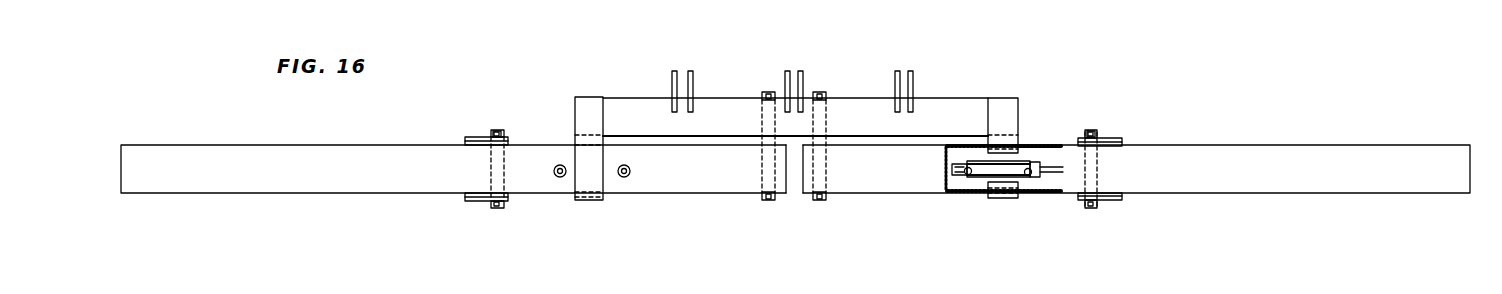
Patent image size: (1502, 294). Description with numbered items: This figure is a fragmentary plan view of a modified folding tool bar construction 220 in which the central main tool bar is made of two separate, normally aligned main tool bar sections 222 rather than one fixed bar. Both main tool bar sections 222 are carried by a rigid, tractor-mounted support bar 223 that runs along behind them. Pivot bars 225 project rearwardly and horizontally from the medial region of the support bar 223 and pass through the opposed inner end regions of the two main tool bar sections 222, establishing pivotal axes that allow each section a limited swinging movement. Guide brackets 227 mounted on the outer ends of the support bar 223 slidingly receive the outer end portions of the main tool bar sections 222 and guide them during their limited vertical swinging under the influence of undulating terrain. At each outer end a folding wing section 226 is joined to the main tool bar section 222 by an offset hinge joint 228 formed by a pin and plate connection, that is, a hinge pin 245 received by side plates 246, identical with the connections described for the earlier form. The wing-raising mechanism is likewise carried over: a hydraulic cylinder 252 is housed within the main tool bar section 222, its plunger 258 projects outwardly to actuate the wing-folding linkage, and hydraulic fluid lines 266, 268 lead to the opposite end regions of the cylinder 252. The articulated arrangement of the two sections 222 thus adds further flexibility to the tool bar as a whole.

The folding tool bar construction 220 is at (838, 213).
The main tool bar section 222 is at (736, 196).
The support bar 223 is at (938, 103).
The pivot bar 225 is at (768, 92).
The folding wing section 226 is at (351, 145).
The guide bracket 227 is at (587, 102).
The offset hinge joint 228 is at (483, 130).
The hinge pin 245 is at (500, 130).
The side plate 246 is at (480, 201).
The hydraulic cylinder 252 is at (1010, 162).
The plunger 258 is at (1052, 168).
The hydraulic fluid line 266 is at (627, 177).
The hydraulic fluid line 268 is at (561, 177).